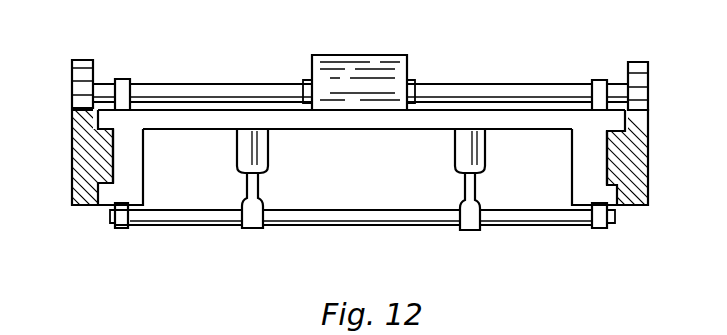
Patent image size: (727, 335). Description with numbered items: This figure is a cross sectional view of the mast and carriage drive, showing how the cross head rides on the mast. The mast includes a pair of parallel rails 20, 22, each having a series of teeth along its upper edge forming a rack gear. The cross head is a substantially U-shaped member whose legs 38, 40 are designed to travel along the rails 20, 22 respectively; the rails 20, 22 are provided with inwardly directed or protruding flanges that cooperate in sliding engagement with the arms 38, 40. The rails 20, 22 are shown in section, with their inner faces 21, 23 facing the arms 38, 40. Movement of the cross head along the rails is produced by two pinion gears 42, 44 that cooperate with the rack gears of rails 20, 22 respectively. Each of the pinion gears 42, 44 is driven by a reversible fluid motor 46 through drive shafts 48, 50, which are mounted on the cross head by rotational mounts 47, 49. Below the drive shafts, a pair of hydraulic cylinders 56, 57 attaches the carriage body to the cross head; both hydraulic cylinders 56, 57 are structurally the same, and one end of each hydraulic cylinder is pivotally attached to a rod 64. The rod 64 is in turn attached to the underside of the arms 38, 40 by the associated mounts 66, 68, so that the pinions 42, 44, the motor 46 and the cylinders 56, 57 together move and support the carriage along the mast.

The rail 20 is at (72, 178).
The inner face of left end block 21 is at (113, 144).
The rail 22 is at (650, 158).
The inner face of right end block 23 is at (605, 152).
The leg 38 is at (143, 178).
The leg 40 is at (572, 181).
The pinion gear 42 is at (72, 88).
The pinion gear 44 is at (649, 88).
The reversible fluid motor 46 is at (393, 55).
The rotational mount 47 is at (125, 79).
The drive shaft 48 is at (173, 84).
The rotational mount 49 is at (599, 80).
The drive shaft 50 is at (450, 83).
The hydraulic cylinder 56 is at (269, 155).
The hydraulic cylinder 57 is at (458, 166).
The rod 64 is at (382, 226).
The mount 66 is at (128, 229).
The mount 68 is at (597, 229).